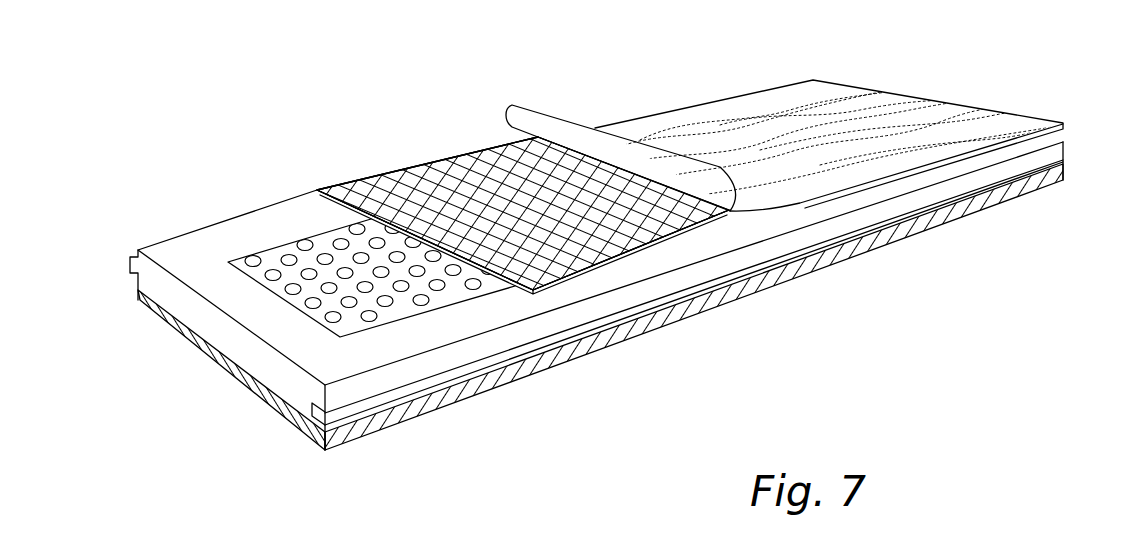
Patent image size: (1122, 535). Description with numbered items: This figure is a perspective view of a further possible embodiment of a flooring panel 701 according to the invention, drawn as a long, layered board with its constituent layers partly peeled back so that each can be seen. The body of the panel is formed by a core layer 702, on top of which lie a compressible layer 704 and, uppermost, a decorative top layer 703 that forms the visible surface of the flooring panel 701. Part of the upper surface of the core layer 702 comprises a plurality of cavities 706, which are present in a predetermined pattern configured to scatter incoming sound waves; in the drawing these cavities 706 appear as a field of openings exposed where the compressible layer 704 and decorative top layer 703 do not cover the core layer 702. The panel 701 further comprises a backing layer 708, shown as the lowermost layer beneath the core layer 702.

The flooring panel 701 is at (146, 176).
The core layer 702 is at (483, 345).
The decorative top layer 703 is at (847, 115).
The compressible layer 704 is at (447, 181).
The cavities 706 is at (323, 257).
The backing layer 708 is at (387, 425).